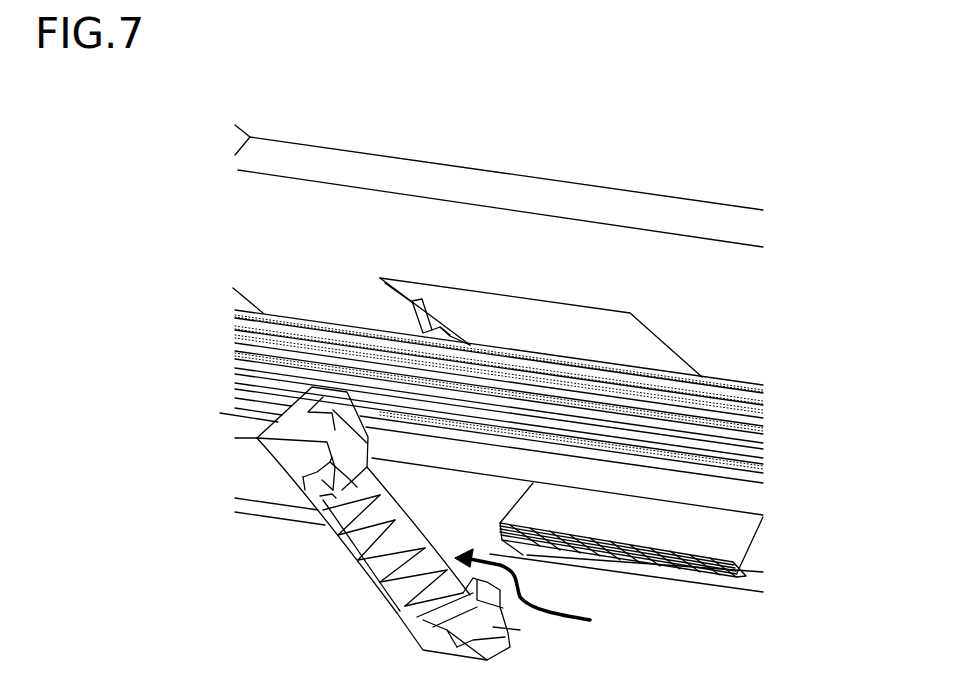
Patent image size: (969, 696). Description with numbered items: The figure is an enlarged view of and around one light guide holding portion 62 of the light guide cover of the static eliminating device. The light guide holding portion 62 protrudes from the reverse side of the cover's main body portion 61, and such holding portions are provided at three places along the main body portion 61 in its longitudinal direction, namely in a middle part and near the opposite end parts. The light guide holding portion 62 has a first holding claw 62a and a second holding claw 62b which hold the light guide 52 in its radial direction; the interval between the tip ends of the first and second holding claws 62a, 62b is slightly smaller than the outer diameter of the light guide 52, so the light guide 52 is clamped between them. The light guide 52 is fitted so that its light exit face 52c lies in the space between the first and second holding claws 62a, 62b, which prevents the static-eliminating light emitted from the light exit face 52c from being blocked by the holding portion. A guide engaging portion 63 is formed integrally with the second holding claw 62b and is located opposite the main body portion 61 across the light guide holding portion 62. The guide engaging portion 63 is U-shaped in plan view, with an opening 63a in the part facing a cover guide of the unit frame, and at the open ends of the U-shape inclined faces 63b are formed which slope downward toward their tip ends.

The main body portion 61 is at (647, 205).
The light guide holding portion 62 is at (470, 93).
The first holding claw 62a is at (452, 327).
The second holding claw 62b is at (352, 400).
The light guide 52 is at (712, 493).
The light exit face 52c is at (713, 407).
The guide engaging portion 63 is at (327, 545).
The opening 63a is at (548, 591).
The inclined faces 63b is at (275, 424).